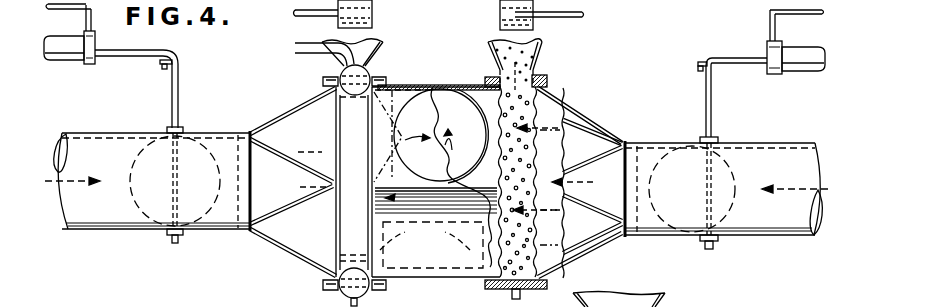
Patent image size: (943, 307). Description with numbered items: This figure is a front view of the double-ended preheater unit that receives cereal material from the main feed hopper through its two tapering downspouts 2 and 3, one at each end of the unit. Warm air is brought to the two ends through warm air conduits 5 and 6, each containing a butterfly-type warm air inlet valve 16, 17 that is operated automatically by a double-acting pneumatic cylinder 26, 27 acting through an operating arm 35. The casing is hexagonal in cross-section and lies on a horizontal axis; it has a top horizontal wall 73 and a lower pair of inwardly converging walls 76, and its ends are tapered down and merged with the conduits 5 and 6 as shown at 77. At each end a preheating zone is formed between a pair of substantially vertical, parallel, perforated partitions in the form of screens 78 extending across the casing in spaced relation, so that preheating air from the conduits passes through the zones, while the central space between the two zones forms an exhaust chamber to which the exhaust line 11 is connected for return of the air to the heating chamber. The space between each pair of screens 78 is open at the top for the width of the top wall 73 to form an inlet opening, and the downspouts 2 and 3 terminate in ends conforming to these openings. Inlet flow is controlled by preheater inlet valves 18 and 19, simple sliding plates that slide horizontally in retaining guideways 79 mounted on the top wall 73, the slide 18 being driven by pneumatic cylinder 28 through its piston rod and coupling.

The downspout 2 is at (322, 46).
The downspout 3 is at (540, 52).
The warm air conduit 5 is at (100, 232).
The warm air conduit 6 is at (774, 238).
The exhaust line 11 is at (445, 118).
The warm air inlet valve 16 is at (138, 160).
The warm air inlet valve 17 is at (728, 162).
The preheater inlet valve 18 is at (335, 88).
The preheater inlet valve 19 is at (540, 80).
The pneumatic cylinder 26 is at (60, 58).
The pneumatic cylinder 27 is at (803, 70).
The pneumatic cylinder 28 is at (330, 77).
The operating arm 35 is at (704, 60).
The top horizontal wall 73 is at (442, 88).
The inwardly converging walls 76 is at (432, 260).
The tapered casing end 77 is at (283, 238).
The screen 78 is at (565, 126).
The retaining guideway 79 is at (381, 78).